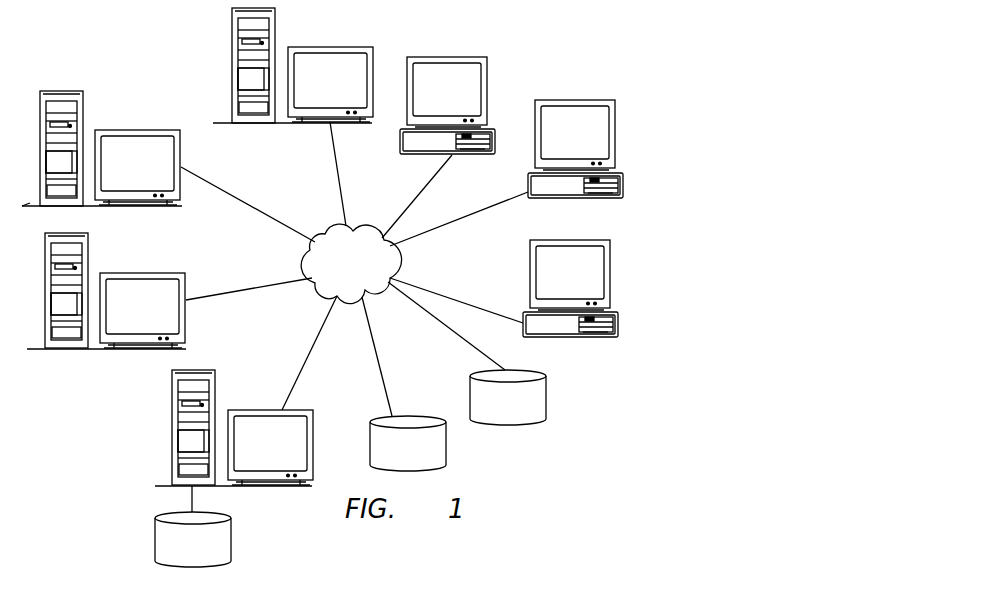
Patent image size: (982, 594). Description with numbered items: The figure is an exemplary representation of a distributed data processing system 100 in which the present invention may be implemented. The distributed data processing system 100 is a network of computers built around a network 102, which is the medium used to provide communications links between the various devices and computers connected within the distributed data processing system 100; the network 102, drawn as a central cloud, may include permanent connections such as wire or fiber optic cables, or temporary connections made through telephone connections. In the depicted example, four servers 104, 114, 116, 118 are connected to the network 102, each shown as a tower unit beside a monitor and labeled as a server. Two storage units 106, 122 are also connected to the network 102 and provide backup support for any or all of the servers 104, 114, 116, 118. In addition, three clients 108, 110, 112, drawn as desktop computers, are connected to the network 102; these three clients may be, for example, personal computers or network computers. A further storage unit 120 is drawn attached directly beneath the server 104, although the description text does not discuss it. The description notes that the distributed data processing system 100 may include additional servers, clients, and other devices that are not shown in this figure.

The distributed data processing system 100 is at (676, 112).
The network 102 is at (366, 271).
The server 104 is at (285, 451).
The storage unit 106 is at (522, 412).
The client 108 is at (461, 99).
The client 110 is at (589, 142).
The client 112 is at (584, 282).
The server 114 is at (157, 315).
The server 116 is at (151, 171).
The server 118 is at (344, 87).
The storage unit 120 is at (209, 555).
The storage unit 122 is at (421, 458).